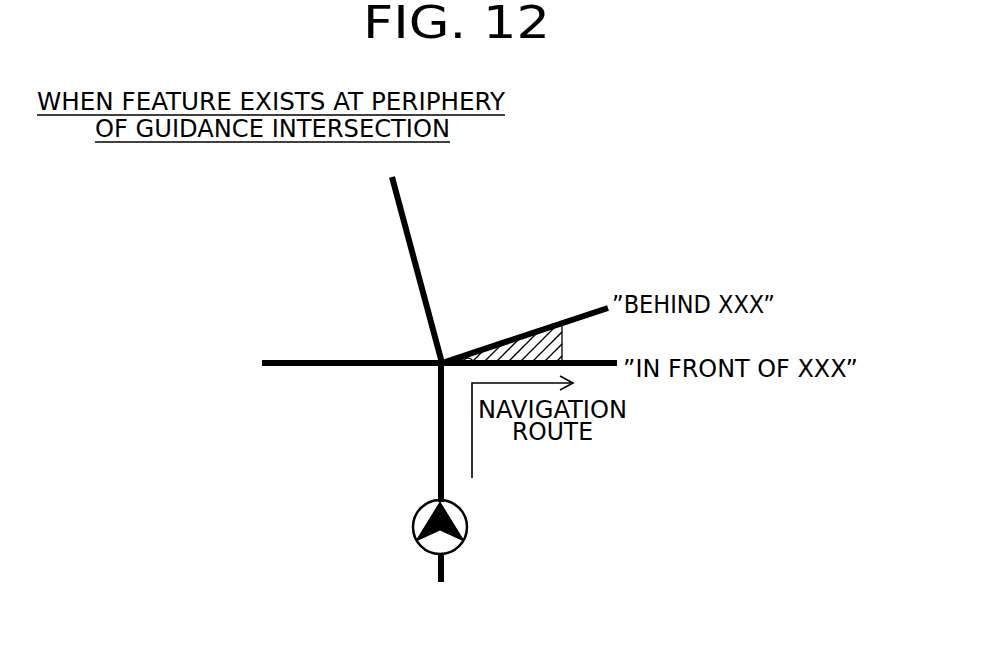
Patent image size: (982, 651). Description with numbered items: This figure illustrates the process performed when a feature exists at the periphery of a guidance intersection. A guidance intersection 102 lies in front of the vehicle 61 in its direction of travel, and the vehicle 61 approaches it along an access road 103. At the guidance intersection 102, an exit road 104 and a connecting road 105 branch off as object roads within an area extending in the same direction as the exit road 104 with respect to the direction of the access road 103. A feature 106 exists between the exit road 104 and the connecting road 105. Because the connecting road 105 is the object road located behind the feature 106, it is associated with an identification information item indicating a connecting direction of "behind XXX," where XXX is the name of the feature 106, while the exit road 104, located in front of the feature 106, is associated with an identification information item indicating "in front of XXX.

The vehicle 61 is at (422, 527).
The guidance intersection 102 is at (383, 333).
The access road 103 is at (440, 420).
The exit road 104 is at (613, 370).
The connecting road 105 is at (558, 317).
The feature 106 is at (537, 333).